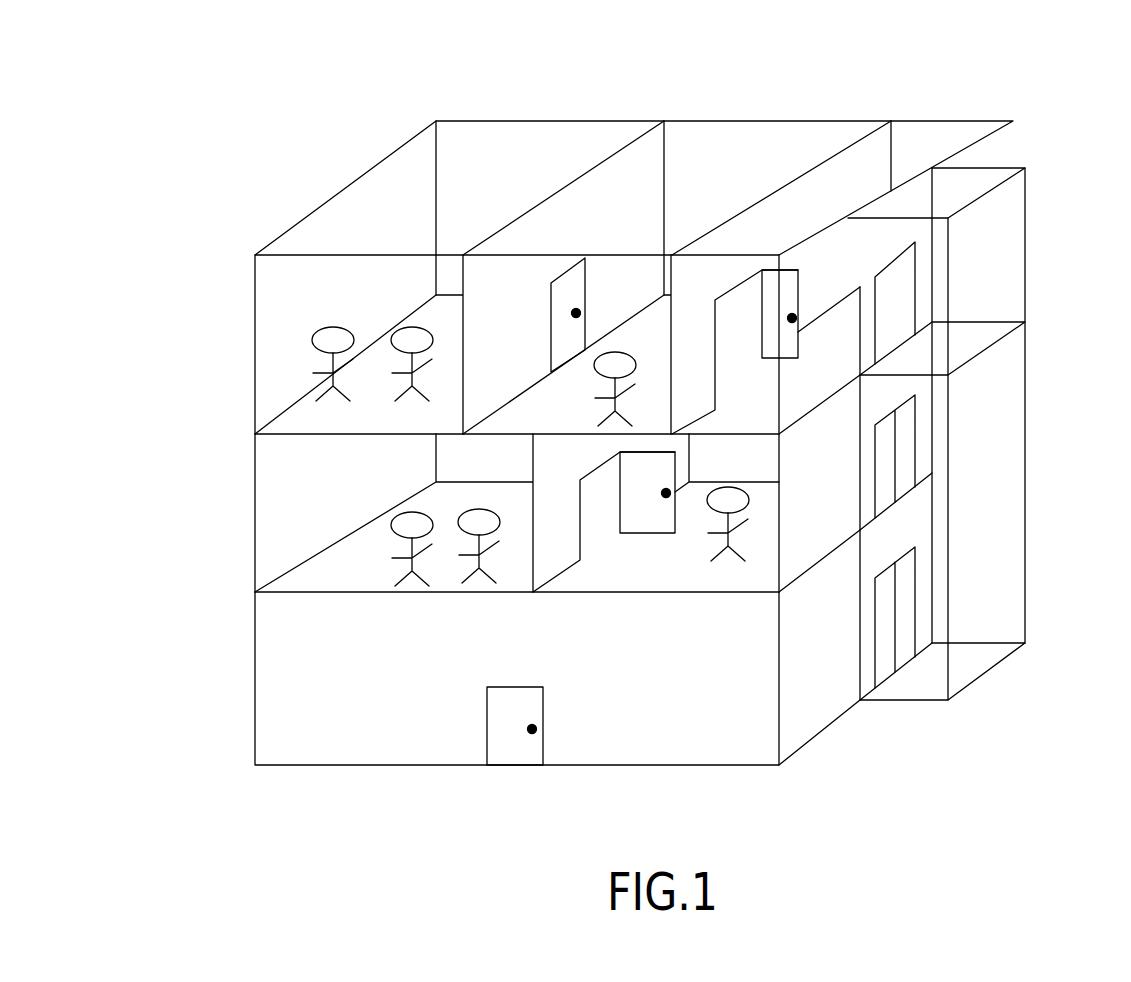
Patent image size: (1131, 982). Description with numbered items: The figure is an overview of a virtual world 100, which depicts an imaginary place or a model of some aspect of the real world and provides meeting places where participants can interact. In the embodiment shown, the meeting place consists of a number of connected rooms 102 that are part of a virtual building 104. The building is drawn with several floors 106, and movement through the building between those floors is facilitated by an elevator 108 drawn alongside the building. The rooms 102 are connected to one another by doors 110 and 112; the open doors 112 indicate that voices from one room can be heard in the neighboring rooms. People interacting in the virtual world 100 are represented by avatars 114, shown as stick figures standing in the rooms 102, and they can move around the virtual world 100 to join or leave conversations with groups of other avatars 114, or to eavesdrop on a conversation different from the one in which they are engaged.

The virtual world 100 is at (595, 57).
The rooms 102 is at (378, 207).
The virtual building 104 is at (660, 90).
The floors 106 is at (275, 622).
The elevator 108 is at (1012, 273).
The doors 110 is at (563, 287).
The open doors 112 is at (793, 295).
The avatars 114 is at (397, 327).